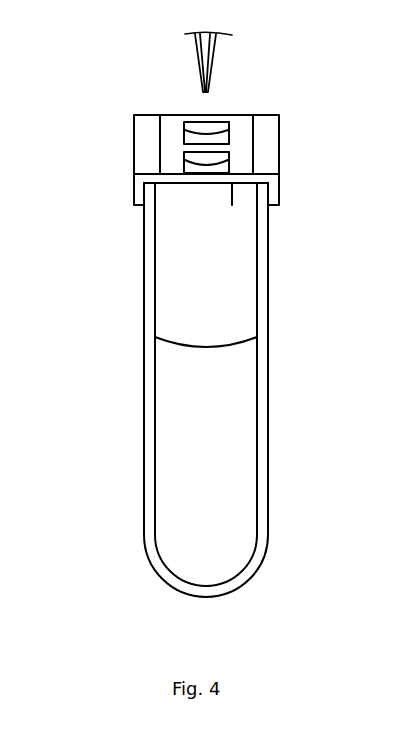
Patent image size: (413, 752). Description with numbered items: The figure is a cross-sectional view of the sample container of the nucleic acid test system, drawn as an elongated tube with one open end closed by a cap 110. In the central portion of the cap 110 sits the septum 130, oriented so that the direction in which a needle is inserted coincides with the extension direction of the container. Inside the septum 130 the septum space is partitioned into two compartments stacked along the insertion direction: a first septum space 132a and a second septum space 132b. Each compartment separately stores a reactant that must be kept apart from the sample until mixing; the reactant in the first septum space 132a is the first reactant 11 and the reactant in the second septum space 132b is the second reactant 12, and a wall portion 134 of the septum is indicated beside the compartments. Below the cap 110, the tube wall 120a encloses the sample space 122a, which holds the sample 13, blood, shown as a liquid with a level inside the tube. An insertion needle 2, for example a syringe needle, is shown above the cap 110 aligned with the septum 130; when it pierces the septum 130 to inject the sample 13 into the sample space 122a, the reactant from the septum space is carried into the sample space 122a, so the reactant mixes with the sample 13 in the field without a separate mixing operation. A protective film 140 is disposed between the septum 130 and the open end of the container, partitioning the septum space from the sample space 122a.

The insertion needle 2 is at (216, 52).
The first reactant 11 is at (184, 160).
The second reactant 12 is at (184, 136).
The sample 13 is at (244, 465).
The cap 110 is at (143, 118).
The tube wall 120a is at (268, 323).
The sample space 122a is at (185, 291).
The septum 130 is at (170, 173).
The first septum space 132a is at (208, 161).
The second septum space 132b is at (203, 129).
The partition wall 134 is at (215, 143).
The protective film 140 is at (232, 185).